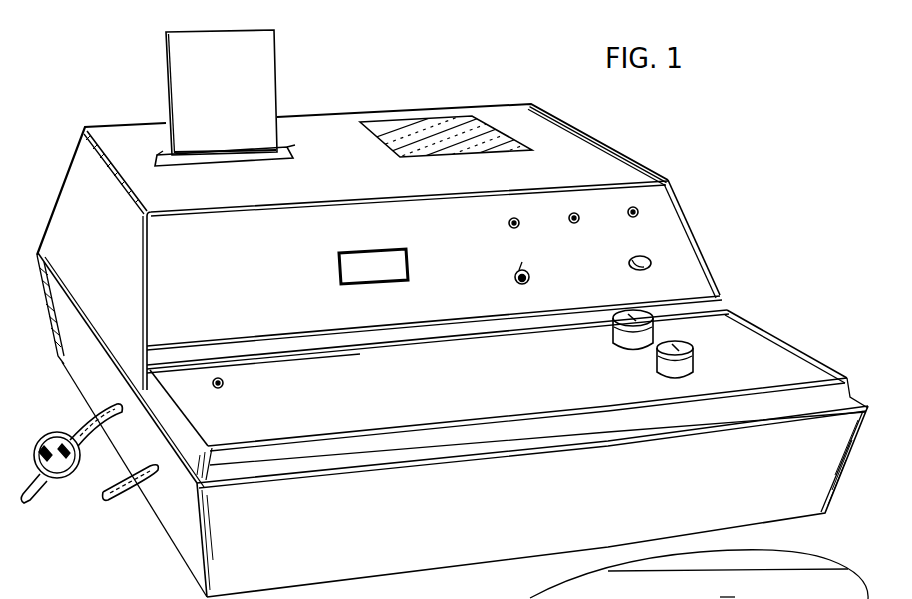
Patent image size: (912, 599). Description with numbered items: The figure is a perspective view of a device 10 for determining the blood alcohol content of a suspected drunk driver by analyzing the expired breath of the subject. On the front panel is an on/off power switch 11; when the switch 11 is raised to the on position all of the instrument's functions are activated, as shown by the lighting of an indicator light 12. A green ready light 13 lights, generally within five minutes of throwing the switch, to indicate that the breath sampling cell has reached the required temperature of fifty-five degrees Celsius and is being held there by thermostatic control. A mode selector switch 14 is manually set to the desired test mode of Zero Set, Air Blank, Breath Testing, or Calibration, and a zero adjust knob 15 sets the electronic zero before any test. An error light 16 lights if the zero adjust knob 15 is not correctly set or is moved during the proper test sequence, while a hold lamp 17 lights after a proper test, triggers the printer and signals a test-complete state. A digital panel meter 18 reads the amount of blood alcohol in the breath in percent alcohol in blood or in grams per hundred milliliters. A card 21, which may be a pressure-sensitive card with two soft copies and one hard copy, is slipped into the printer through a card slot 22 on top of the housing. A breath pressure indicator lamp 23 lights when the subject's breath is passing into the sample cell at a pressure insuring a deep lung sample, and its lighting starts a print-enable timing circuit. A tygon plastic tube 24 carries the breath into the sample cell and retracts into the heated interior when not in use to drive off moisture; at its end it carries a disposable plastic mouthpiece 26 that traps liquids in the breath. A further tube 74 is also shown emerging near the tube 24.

The device 10 is at (688, 149).
The on/off power switch 11 is at (514, 280).
The indicator light 12 is at (509, 227).
The green ready light 13 is at (628, 218).
The mode selector switch 14 is at (630, 315).
The zero adjust knob 15 is at (690, 343).
The error light 16 is at (571, 225).
The hold lamp 17 is at (660, 263).
The digital panel meter 18 is at (388, 252).
The card 21 is at (270, 101).
The card slot 22 is at (162, 153).
The breath pressure indicator lamp 23 is at (222, 389).
The tygon plastic tube 24 is at (82, 442).
The disposable plastic mouthpiece 26 is at (38, 441).
The tube 74 is at (132, 503).